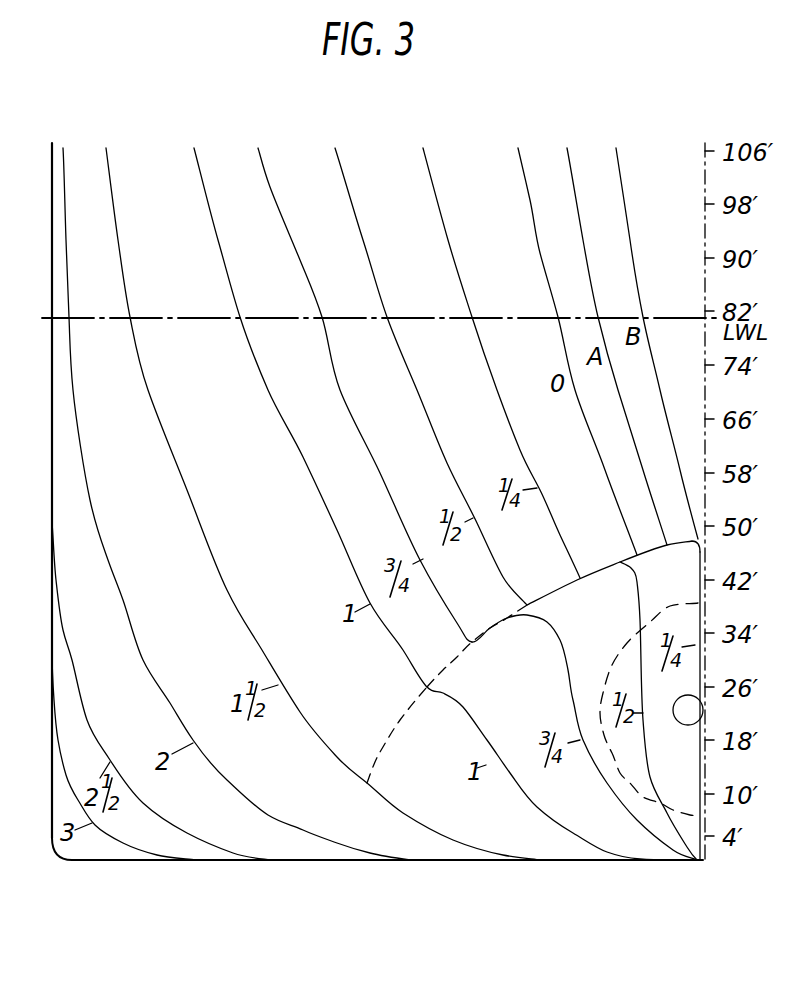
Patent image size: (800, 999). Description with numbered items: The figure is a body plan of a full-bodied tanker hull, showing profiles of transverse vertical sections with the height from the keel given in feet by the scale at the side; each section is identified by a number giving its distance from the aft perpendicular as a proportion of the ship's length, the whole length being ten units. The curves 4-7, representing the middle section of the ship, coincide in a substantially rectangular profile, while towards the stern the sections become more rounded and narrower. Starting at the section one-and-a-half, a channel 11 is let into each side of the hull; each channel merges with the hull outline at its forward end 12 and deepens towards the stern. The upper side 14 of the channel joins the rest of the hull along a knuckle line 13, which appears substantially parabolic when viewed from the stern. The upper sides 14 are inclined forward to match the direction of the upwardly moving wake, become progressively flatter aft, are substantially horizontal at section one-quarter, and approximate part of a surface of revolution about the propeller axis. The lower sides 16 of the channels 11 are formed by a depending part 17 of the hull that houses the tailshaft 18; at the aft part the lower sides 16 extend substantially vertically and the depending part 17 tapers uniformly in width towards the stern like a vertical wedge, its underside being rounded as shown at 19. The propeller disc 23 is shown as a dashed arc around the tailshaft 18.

The channel 11 is at (532, 639).
The forward end of channel 12 is at (365, 784).
The knuckle line 13 is at (395, 728).
The upper side of channel 14 is at (485, 635).
The lower side of channel 16 is at (568, 682).
The depending part of hull 17 is at (682, 586).
The tailshaft 18 is at (698, 710).
The rounded underside of depending portion 19 is at (680, 853).
The propeller disc 23 is at (617, 812).
The curves representing the middle section of the ship 4-7 is at (50, 846).